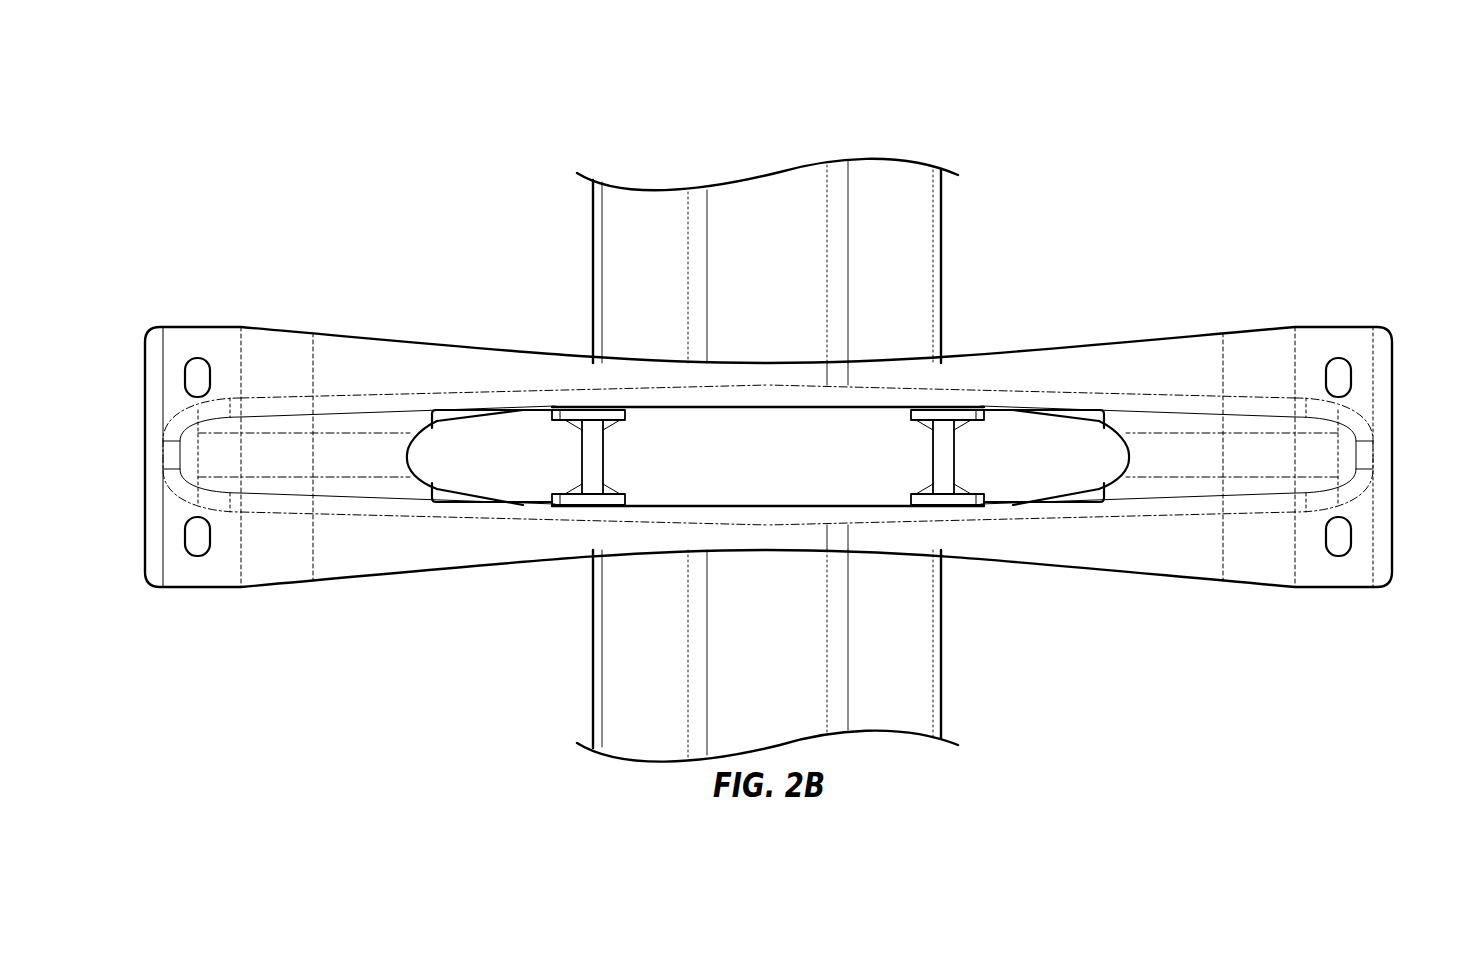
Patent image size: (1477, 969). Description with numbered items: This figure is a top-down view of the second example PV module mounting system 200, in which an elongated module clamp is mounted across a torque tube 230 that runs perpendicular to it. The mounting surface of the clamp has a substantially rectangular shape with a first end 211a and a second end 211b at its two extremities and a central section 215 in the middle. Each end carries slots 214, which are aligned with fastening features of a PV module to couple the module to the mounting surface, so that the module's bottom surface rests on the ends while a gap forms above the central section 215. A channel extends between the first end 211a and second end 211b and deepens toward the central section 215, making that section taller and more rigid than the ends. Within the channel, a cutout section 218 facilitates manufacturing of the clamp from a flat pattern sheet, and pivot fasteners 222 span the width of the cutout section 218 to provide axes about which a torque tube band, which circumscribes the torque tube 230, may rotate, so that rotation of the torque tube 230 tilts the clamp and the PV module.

The PV module mounting system 200 is at (1377, 113).
The first end 211a is at (168, 395).
The second end 211b is at (1363, 395).
The slot 214 is at (1352, 373).
The central section 215 is at (772, 363).
The cutout section 218 is at (478, 420).
The pivot fastener 222 is at (953, 448).
The torque tube 230 is at (949, 229).